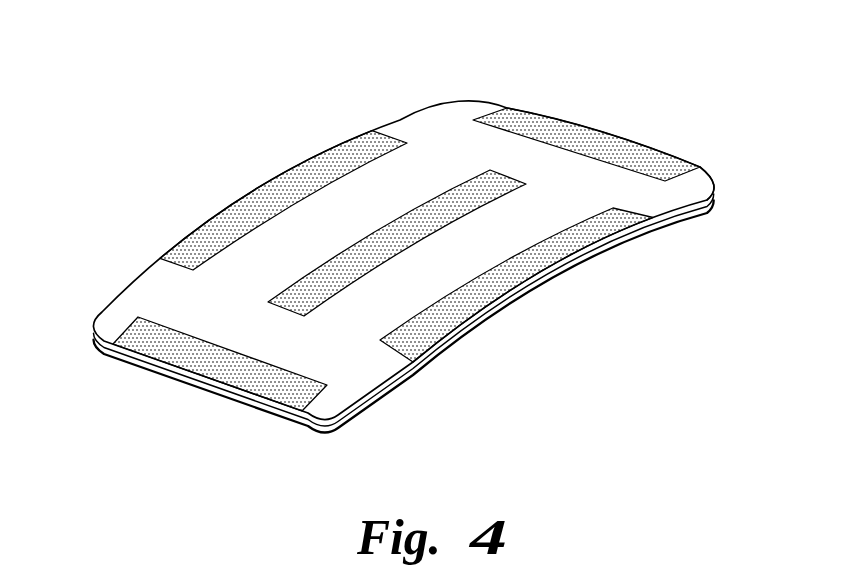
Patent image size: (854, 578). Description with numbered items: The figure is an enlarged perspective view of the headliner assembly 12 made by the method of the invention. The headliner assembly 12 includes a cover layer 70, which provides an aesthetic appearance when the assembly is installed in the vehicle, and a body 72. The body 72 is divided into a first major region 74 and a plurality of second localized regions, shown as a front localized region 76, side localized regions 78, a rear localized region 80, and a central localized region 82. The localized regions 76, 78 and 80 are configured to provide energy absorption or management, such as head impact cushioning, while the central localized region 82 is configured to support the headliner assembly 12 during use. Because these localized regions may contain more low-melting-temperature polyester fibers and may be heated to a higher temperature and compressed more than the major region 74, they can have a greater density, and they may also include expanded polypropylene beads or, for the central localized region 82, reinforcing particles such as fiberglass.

The headliner assembly 12 is at (208, 84).
The cover layer 70 is at (283, 418).
The body 72 is at (120, 298).
The first major region 74 is at (686, 195).
The front localized region 76 is at (175, 373).
The side localized regions 78 is at (343, 142).
The rear localized region 80 is at (535, 111).
The central localized region 82 is at (464, 182).